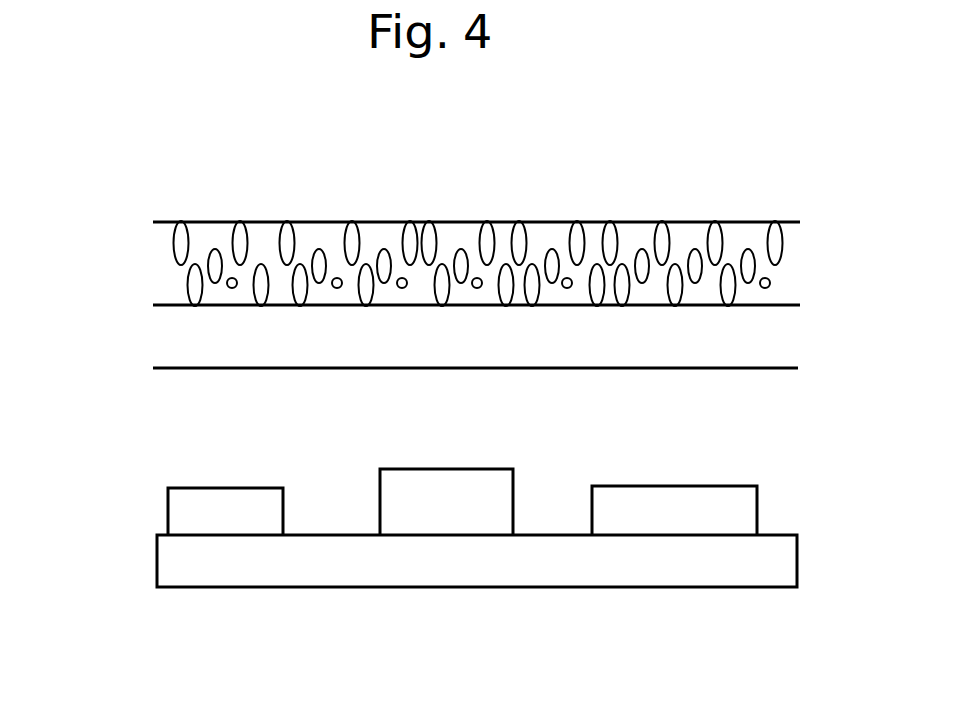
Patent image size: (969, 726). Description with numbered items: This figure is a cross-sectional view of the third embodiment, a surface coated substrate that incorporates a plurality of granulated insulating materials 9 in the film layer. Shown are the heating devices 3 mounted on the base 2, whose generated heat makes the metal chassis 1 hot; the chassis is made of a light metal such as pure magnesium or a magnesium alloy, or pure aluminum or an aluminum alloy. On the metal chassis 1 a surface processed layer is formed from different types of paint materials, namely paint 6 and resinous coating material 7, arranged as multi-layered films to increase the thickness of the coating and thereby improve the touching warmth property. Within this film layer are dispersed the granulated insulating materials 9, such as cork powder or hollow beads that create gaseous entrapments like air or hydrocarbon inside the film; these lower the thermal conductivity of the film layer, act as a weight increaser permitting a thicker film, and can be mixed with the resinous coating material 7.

The metal chassis 1 is at (168, 342).
The base 2 is at (167, 566).
The heating device 3 is at (228, 488).
The paint 6 is at (421, 229).
The resinous coating material 7 is at (421, 229).
The granulated insulating materials 9 is at (549, 265).